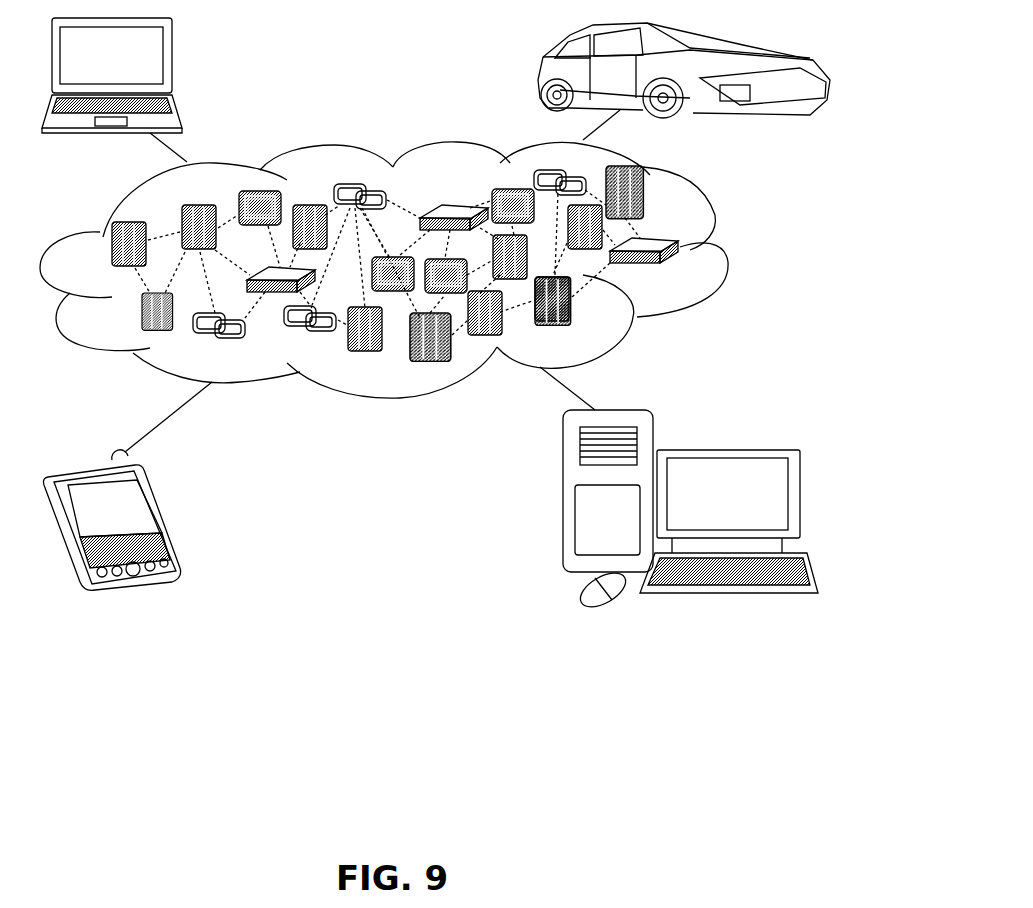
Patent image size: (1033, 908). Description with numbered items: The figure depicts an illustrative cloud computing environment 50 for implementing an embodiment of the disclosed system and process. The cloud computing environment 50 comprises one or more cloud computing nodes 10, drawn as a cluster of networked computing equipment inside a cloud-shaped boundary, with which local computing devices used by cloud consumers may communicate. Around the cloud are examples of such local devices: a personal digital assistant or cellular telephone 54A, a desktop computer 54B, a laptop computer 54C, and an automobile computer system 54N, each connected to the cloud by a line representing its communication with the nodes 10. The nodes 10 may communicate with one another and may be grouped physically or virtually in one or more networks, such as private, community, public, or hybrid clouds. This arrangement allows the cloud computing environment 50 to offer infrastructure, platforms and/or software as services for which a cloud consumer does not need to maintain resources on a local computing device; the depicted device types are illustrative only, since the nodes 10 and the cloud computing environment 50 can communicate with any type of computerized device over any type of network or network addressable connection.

The laptop computer 54C is at (172, 55).
The automobile computer system 54N is at (537, 72).
The cellular telephone 54A is at (163, 517).
The desktop computer 54B is at (743, 448).
The cloud computing environment 50 is at (413, 270).
The cloud computing node 10 is at (700, 285).